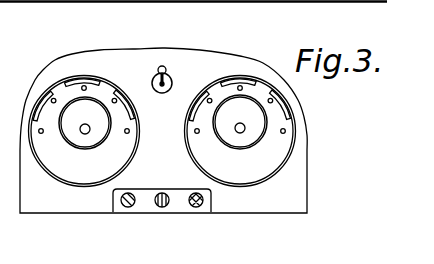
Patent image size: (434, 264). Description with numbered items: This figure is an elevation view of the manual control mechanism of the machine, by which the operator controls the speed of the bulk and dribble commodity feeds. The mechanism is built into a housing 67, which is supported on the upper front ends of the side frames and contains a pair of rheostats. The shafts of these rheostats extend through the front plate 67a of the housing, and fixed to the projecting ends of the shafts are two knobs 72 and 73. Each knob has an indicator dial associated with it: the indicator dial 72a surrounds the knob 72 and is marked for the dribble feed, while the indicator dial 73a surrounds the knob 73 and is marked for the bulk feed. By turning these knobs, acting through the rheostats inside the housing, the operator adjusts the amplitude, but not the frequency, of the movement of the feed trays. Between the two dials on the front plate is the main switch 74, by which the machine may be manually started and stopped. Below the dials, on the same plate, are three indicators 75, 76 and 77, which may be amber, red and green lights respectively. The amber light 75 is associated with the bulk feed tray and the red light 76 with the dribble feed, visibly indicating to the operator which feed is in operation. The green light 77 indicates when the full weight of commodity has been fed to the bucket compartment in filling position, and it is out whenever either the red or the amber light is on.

The housing 67 is at (228, 49).
The front plate 67a is at (124, 67).
The knob 72 is at (85, 122).
The indicator dial 72a is at (53, 171).
The knob 73 is at (240, 122).
The indicator dial 73a is at (266, 178).
The main switch 74 is at (167, 92).
The amber light 75 is at (197, 207).
The red light 76 is at (163, 207).
The green light 77 is at (131, 207).